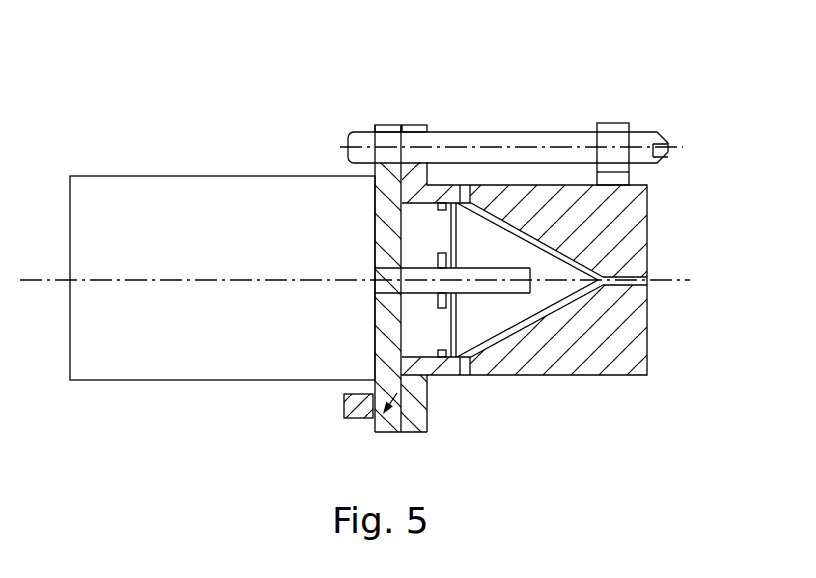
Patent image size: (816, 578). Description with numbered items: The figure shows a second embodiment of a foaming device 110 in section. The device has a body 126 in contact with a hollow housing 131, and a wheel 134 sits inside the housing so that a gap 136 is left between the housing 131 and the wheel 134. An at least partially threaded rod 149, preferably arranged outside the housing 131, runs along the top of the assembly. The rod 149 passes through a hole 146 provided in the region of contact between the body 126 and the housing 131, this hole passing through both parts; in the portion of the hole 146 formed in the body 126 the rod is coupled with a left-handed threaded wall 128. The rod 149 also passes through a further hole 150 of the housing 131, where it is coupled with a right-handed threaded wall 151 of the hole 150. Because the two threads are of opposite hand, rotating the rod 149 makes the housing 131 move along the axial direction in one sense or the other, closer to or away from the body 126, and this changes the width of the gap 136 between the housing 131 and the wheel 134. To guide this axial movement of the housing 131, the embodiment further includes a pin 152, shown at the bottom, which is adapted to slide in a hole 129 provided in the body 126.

The foaming device 110 is at (141, 111).
The body 126 is at (387, 215).
The left-handed threaded wall 128 is at (377, 147).
The hole 129 is at (430, 380).
The hollow housing 131 is at (637, 215).
The wheel 134 is at (520, 305).
The gap 136 is at (572, 300).
The hole 146 is at (426, 151).
The threaded rod 149 is at (509, 132).
The further hole 150 is at (623, 149).
The right-handed threaded wall 151 is at (603, 138).
The pin 152 is at (350, 405).